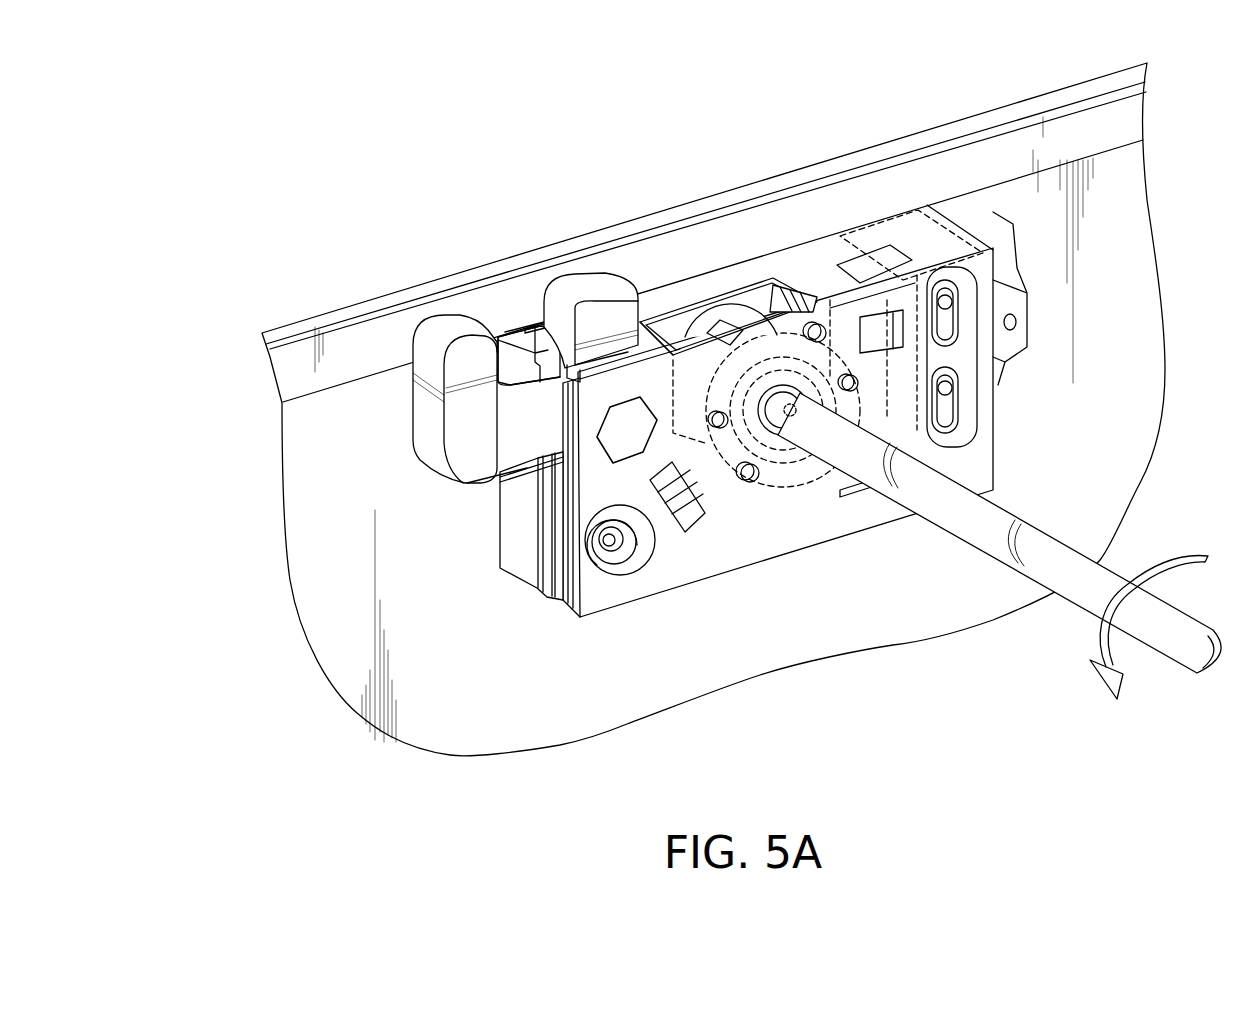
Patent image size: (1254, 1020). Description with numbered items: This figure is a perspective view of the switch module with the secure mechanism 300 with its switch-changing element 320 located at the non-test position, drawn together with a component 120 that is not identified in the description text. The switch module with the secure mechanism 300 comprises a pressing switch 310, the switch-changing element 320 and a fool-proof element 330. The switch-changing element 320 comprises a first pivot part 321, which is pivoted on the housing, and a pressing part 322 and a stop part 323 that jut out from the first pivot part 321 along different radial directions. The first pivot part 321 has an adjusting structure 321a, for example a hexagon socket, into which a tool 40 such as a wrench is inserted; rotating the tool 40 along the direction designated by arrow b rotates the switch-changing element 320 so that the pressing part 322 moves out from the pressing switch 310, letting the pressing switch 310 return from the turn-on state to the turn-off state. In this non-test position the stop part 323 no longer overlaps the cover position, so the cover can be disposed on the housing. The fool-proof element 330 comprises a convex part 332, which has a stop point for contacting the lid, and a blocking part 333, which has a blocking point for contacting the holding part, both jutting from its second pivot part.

The panel 120 is at (338, 525).
The switch module with the secure mechanism 300 is at (809, 400).
The pressing switch 310 is at (942, 232).
The switch-changing element 320 is at (695, 292).
The first pivot part 321 is at (778, 438).
The adjusting structure 321a is at (802, 432).
The pressing part 322 is at (760, 275).
The stop part 323 is at (667, 318).
The fool-proof element 330 is at (539, 388).
The convex part 332 is at (586, 290).
The blocking part 333 is at (450, 330).
The tool 40 is at (1043, 543).